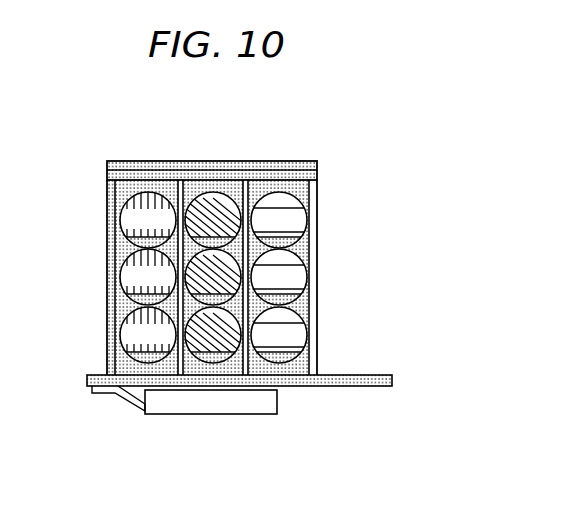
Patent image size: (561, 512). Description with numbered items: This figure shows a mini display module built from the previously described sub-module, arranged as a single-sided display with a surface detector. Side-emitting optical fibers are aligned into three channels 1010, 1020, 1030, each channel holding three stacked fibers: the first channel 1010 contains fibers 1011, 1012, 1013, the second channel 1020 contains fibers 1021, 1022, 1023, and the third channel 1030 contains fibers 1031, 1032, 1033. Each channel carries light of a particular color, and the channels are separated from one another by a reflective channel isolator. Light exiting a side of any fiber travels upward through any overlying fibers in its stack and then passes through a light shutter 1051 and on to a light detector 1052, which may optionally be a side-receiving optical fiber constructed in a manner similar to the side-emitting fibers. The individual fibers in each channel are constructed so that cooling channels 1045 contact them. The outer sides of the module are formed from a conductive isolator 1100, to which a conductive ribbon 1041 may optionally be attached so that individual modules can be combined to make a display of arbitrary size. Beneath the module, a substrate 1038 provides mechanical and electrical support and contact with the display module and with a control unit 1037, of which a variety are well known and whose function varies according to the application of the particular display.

The channel 1010 is at (177, 156).
The channel 1020 is at (243, 156).
The channel 1030 is at (309, 156).
The optical fiber 1011 is at (148, 334).
The optical fiber 1012 is at (148, 276).
The optical fiber 1013 is at (148, 219).
The optical fiber 1021 is at (207, 335).
The optical fiber 1022 is at (207, 277).
The optical fiber 1023 is at (207, 220).
The optical fiber 1031 is at (279, 335).
The optical fiber 1032 is at (279, 277).
The optical fiber 1033 is at (279, 220).
The control unit 1037 is at (187, 416).
The substrate 1038 is at (392, 383).
The conductive ribbon 1041 is at (107, 233).
The cooling channels 1045 is at (120, 307).
The light shutter 1051 is at (317, 176).
The light detector 1052 is at (105, 164).
The conductive isolator 1100 is at (108, 262).